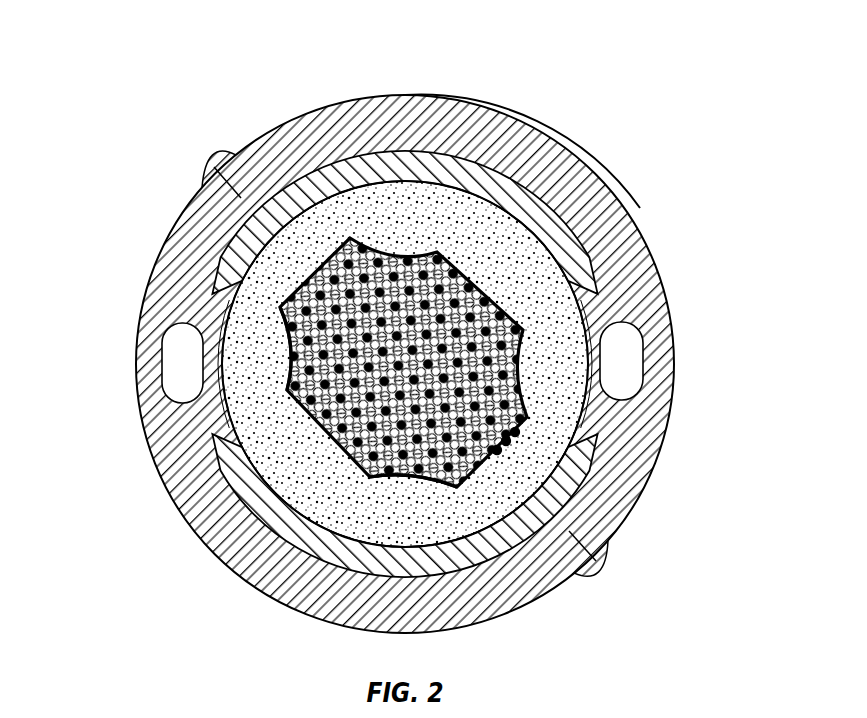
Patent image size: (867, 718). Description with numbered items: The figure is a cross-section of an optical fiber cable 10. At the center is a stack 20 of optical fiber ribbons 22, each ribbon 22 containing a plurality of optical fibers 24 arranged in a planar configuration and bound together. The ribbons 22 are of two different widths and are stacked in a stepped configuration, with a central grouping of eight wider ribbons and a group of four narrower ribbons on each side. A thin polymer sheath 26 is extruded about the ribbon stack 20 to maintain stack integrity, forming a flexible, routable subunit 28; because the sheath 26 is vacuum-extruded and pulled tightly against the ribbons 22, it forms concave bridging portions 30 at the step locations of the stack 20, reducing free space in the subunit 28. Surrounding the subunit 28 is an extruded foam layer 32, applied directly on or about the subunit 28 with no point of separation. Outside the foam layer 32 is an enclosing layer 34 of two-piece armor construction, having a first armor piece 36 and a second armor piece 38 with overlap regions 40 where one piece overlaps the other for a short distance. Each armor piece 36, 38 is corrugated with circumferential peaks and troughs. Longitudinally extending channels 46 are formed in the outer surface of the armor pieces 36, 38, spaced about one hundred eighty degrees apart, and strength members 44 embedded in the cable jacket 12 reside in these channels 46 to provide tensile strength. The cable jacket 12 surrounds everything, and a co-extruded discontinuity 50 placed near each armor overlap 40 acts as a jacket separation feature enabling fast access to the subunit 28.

The optical fiber cable 10 is at (410, 341).
The cable jacket 12 is at (312, 130).
The stack of optical fiber ribbons 20 is at (409, 341).
The optical fiber ribbons 22 is at (513, 440).
The optical fibers 24 is at (473, 283).
The sheath 26 is at (307, 424).
The subunit 28 is at (502, 300).
The concave bridging portions 30 is at (421, 484).
The foam layer 32 is at (550, 300).
The enclosing layer 34 is at (535, 198).
The first armor piece 36 is at (345, 153).
The second armor piece 38 is at (281, 540).
The overlap regions 40 is at (240, 245).
The strength members 44 is at (178, 355).
The channels 46 is at (607, 320).
The discontinuity 50 is at (210, 179).